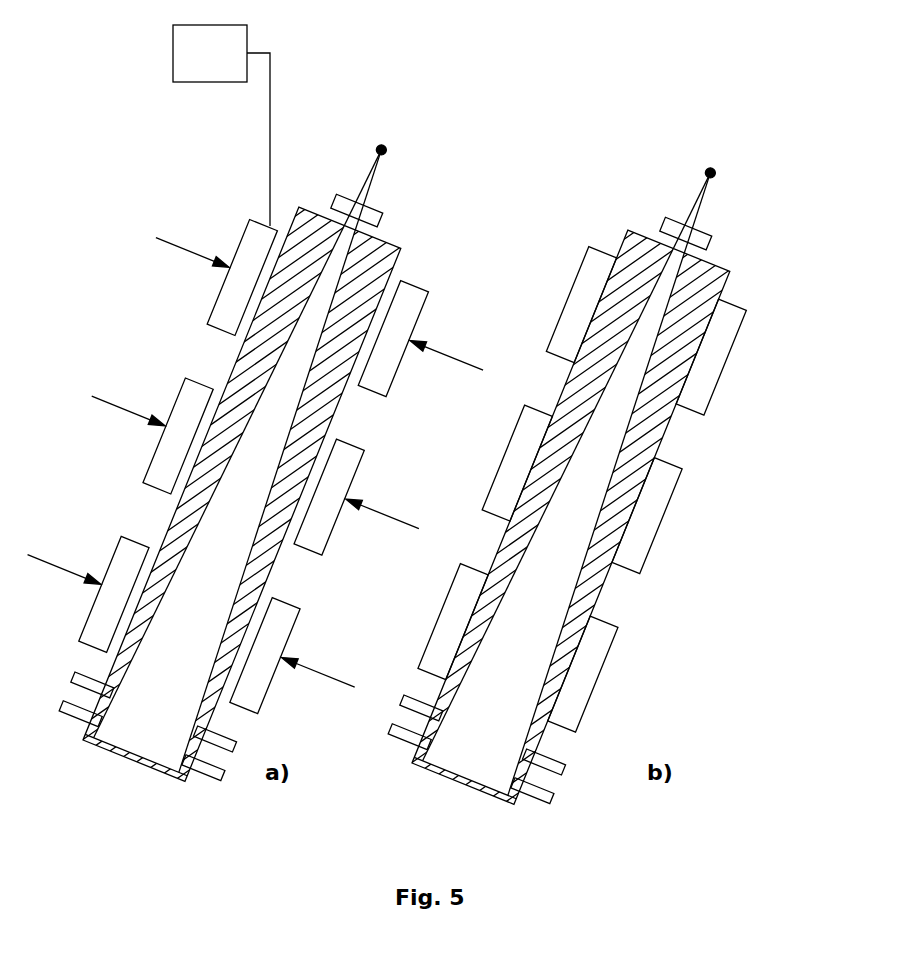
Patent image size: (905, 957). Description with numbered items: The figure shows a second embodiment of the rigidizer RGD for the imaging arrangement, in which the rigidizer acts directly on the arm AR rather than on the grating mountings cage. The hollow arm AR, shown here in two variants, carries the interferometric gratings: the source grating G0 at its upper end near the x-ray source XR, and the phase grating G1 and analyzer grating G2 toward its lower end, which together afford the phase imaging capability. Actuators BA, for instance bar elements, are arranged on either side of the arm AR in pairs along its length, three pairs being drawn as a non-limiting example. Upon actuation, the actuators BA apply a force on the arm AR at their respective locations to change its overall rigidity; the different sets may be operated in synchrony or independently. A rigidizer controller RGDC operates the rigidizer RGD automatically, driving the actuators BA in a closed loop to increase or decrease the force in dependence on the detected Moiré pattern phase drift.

The rigidizer RGD is at (550, 152).
The rigidizer controller RGDC is at (190, 75).
The x-ray source XR is at (382, 150).
The actuators BA is at (250, 232).
The arm AR is at (410, 278).
The source grating G0 is at (538, 227).
The π-phase grating G1 is at (391, 765).
The analyzer grating G2 is at (245, 718).